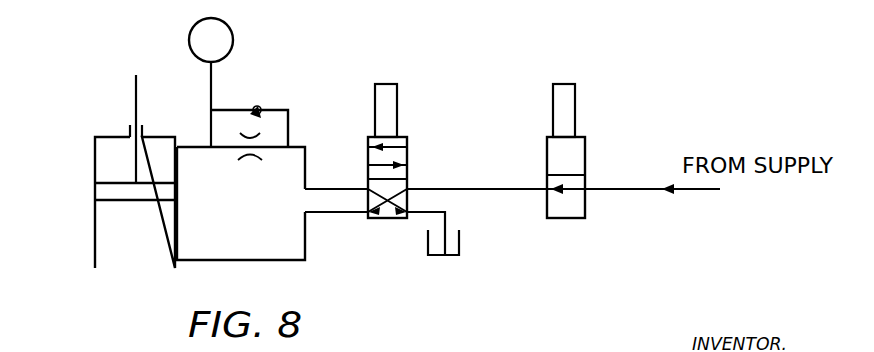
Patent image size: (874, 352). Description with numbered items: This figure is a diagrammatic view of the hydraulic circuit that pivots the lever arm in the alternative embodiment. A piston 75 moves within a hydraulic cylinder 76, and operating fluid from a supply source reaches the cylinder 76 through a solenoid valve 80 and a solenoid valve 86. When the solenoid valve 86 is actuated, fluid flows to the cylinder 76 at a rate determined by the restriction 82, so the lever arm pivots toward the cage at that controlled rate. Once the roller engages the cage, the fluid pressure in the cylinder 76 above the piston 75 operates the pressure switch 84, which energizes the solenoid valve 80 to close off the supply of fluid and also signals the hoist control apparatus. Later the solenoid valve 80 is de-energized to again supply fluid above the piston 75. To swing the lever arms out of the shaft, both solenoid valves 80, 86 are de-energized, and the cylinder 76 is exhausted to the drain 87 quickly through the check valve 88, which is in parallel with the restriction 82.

The piston 75 is at (105, 190).
The hydraulic cylinder 76 is at (107, 247).
The solenoid valve 80 is at (568, 103).
The restriction 82 is at (250, 152).
The pressure switch 84 is at (227, 32).
The solenoid valve 86 is at (387, 100).
The drain 87 is at (457, 243).
The check valve 88 is at (262, 107).